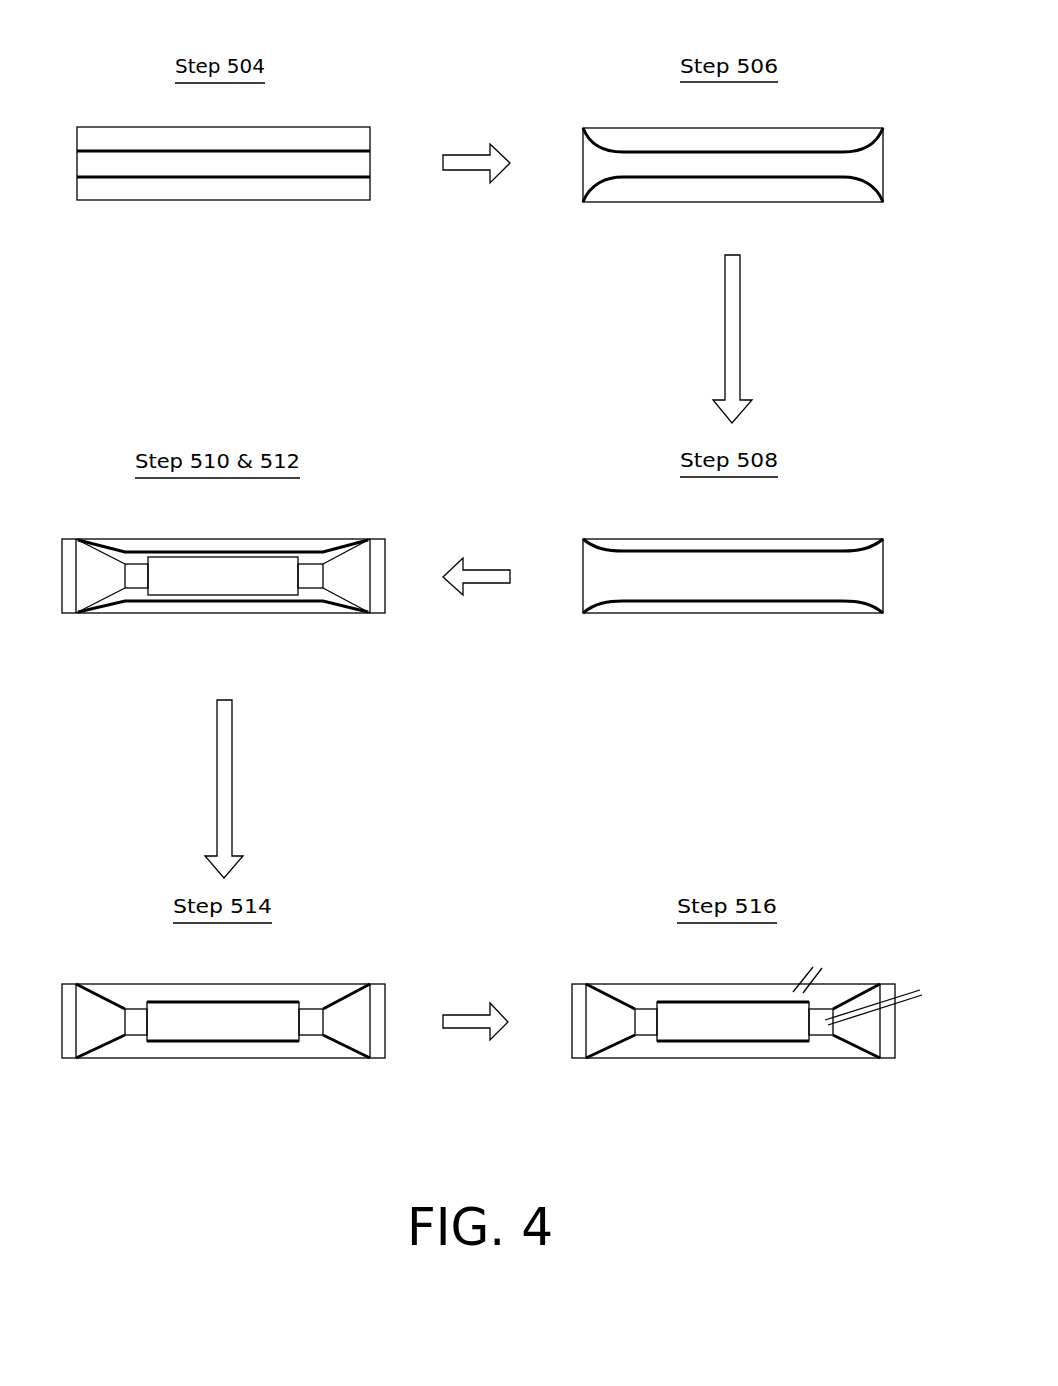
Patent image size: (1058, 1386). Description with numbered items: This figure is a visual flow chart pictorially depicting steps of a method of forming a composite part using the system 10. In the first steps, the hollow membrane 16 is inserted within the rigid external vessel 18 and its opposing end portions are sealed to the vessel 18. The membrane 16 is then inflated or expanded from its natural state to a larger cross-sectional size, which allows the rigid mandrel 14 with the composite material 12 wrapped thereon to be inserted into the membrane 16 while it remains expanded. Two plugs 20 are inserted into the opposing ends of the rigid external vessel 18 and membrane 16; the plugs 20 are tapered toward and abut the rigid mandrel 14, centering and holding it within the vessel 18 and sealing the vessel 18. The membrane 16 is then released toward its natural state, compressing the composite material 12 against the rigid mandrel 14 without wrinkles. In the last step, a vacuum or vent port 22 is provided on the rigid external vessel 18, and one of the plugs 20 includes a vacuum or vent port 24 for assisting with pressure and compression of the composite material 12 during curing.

The system 10 is at (104, 506).
The composite material 12 is at (188, 582).
The rigid mandrel 14 is at (306, 582).
The membrane 16 is at (157, 178).
The rigid external vessel 18 is at (262, 201).
The plugs 20 is at (82, 575).
The vacuum or vent port 22 is at (797, 985).
The vacuum or vent port 24 is at (905, 1003).